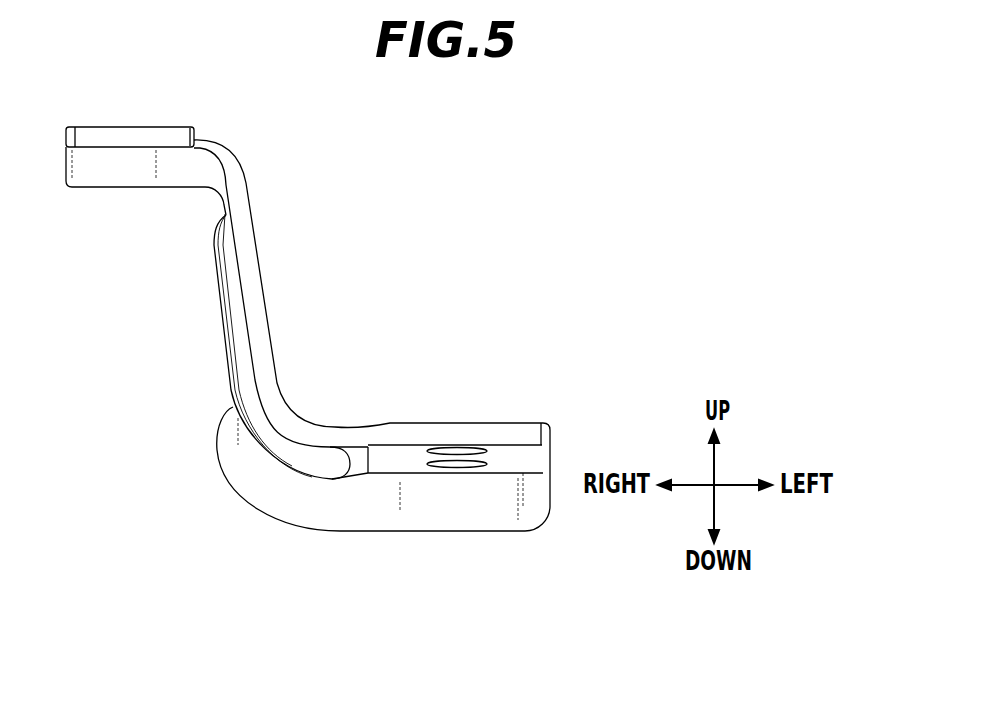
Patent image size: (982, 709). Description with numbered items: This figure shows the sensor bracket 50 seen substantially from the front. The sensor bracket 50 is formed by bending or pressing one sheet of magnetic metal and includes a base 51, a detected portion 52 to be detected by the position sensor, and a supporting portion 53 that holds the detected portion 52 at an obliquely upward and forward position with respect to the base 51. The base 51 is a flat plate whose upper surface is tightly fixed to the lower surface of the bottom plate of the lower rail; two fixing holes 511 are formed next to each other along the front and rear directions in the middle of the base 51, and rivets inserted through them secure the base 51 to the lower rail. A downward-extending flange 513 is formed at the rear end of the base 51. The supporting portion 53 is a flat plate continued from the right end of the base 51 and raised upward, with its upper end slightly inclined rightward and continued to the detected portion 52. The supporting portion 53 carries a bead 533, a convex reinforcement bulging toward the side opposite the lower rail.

The sensor bracket 50 is at (472, 179).
The base 51 is at (500, 421).
The fixing holes 511 is at (454, 466).
The flange 513 is at (386, 508).
The detected portion 52 is at (127, 127).
The supporting portion 53 is at (268, 260).
The bead 533 is at (222, 303).